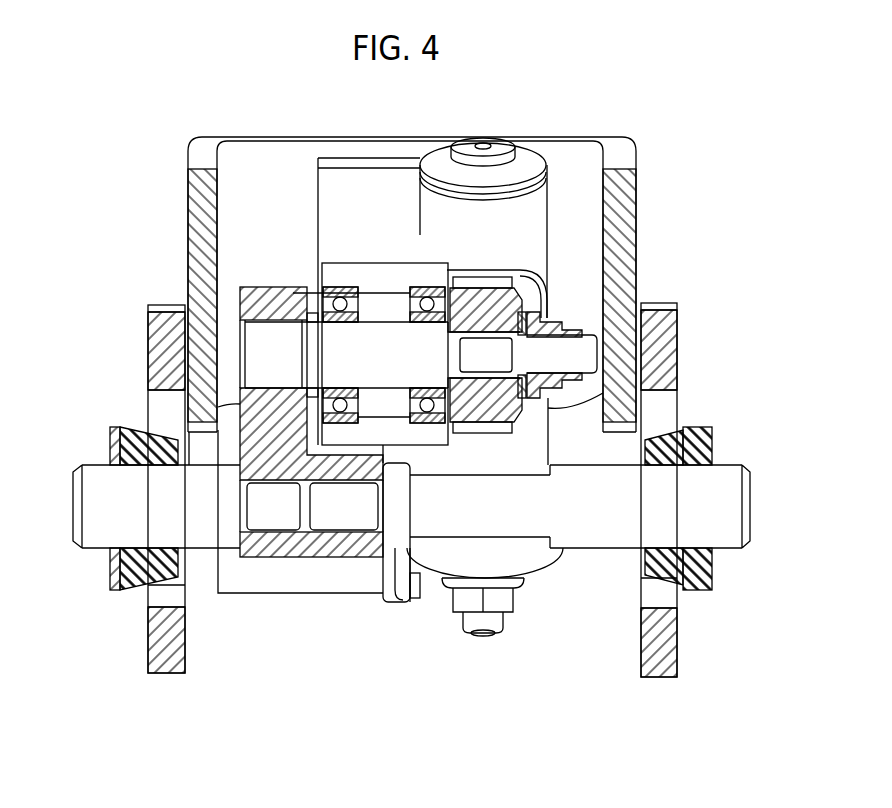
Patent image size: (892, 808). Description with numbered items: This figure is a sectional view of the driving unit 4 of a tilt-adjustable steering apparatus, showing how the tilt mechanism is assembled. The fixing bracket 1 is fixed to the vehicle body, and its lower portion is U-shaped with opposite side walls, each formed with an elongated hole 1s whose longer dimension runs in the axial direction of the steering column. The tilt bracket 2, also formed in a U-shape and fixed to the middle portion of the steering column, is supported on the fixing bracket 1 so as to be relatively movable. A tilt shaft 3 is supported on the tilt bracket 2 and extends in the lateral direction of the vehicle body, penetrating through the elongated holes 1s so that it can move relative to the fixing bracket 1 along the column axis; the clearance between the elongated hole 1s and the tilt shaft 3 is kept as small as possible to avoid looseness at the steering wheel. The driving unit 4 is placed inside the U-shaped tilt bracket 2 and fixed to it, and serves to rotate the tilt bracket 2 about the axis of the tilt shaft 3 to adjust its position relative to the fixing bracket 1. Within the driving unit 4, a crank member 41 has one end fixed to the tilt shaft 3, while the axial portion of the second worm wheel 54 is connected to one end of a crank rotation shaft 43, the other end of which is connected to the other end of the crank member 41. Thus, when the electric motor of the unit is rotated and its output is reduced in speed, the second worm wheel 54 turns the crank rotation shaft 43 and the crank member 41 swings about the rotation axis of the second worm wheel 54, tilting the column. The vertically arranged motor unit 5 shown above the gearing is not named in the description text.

The fixing bracket 1 is at (146, 506).
The elongated hole 1s is at (162, 607).
The tilt bracket 2 is at (200, 207).
The tilt shaft 3 is at (583, 527).
The driving unit 4 is at (418, 622).
The motor 5 is at (560, 227).
The crank member 41 is at (325, 545).
The crank rotation shaft 43 is at (260, 333).
The second worm wheel 54 is at (520, 298).